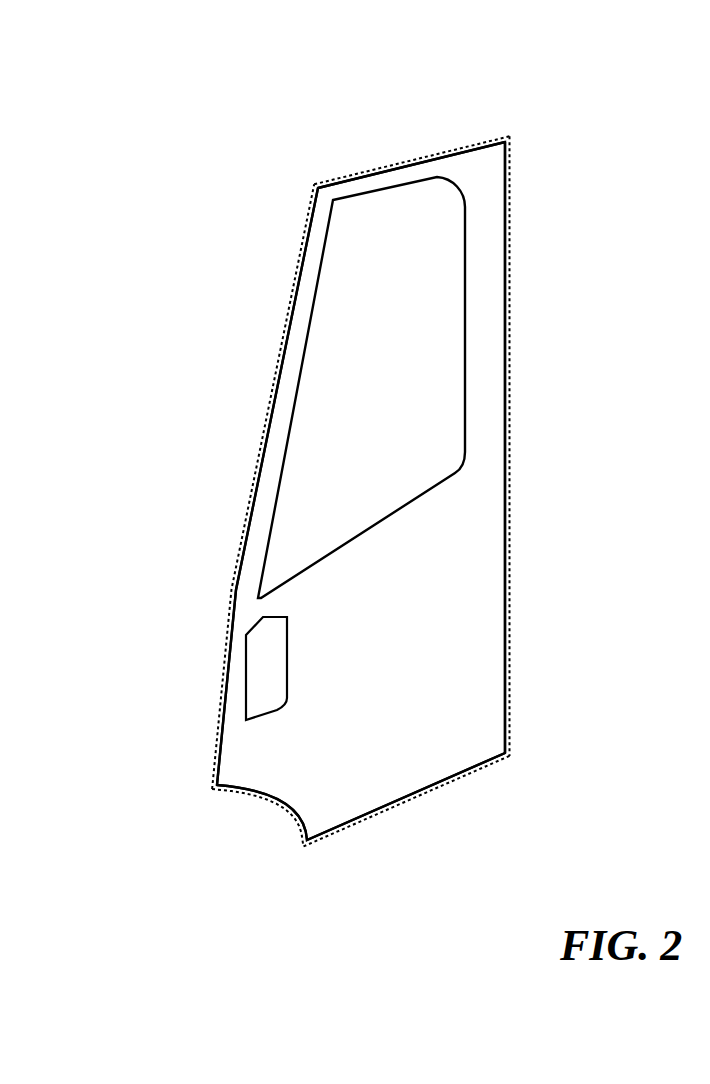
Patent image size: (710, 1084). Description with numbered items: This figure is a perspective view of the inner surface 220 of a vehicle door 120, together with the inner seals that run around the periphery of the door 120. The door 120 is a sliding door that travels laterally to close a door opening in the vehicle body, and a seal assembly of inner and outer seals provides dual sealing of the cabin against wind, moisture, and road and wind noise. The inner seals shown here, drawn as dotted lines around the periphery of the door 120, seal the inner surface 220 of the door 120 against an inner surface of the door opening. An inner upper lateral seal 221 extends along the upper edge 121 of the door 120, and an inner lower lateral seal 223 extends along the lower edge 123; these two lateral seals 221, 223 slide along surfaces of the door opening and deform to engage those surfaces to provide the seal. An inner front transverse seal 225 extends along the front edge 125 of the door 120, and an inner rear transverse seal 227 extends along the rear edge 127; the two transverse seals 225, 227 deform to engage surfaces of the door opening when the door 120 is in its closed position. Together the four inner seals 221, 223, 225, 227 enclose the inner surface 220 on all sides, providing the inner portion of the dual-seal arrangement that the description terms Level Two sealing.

The door 120 is at (590, 84).
The upper edge 121 is at (330, 150).
The inner surface 220 is at (497, 258).
The inner upper lateral seal 221 is at (418, 157).
The inner rear transverse seal 227 is at (512, 448).
The rear edge 127 is at (528, 535).
The lower edge 123 is at (449, 800).
The inner lower lateral seal 223 is at (375, 817).
The front edge 125 is at (225, 562).
The inner front transverse seal 225 is at (255, 477).